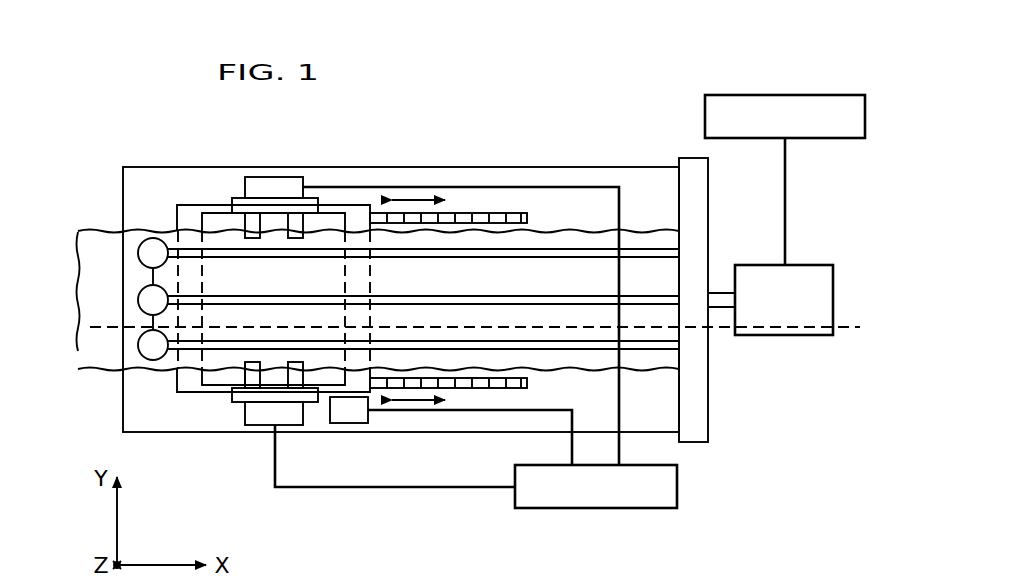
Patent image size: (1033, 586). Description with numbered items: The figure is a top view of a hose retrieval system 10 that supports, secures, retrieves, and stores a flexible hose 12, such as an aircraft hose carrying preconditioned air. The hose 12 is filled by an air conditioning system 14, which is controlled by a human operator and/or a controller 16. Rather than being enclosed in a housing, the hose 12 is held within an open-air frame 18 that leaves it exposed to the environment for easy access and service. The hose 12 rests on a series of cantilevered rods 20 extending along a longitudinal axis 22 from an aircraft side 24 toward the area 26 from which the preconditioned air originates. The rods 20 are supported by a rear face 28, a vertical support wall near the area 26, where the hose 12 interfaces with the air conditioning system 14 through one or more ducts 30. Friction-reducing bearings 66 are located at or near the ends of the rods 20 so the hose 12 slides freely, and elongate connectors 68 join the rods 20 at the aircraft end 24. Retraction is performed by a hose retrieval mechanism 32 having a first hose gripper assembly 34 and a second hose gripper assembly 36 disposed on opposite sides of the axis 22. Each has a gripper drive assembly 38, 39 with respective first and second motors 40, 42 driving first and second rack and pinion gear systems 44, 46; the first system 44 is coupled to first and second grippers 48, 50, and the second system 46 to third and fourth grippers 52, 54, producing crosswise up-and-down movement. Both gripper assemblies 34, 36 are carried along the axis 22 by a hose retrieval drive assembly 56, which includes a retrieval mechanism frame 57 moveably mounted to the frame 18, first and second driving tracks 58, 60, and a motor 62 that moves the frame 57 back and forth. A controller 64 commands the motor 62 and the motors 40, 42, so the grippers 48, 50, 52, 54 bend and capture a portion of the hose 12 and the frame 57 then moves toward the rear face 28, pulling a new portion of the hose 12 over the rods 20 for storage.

The hose retrieval system 10 is at (601, 78).
The flexible hose 12 is at (105, 231).
The air conditioning (A/C) system 14 is at (807, 265).
The controller 16 is at (800, 95).
The open-air frame 18 is at (138, 167).
The cantilevered rods 20 is at (548, 246).
The longitudinal axis 22 is at (860, 328).
The aircraft side 24 is at (99, 161).
The PCA origin area 26 is at (721, 196).
The rear face 28 is at (710, 407).
The ducts 30 is at (723, 293).
The hose retrieval mechanism 32 is at (153, 279).
The first hose gripper assembly 34 is at (237, 377).
The second hose gripper assembly 36 is at (238, 223).
The first gripper drive assembly 38 is at (308, 418).
The second gripper drive assembly 39 is at (307, 185).
The first motor 40 is at (257, 425).
The second motor 42 is at (255, 177).
The first rack and pinion gear system 44 is at (230, 397).
The second rack and pinion gear system 46 is at (253, 222).
The first gripper 48 is at (252, 380).
The second gripper 50 is at (295, 384).
The third gripper 52 is at (250, 213).
The fourth gripper 54 is at (295, 220).
The hose retrieval drive assembly 56 is at (408, 418).
The retrieval mechanism frame 57 is at (381, 403).
The first driving track 58 is at (500, 388).
The second driving track 60 is at (502, 213).
The motor 62 is at (363, 418).
The controller 64 is at (595, 508).
The friction-reducing bearings 66 is at (137, 351).
The elongate connectors 68 is at (170, 278).